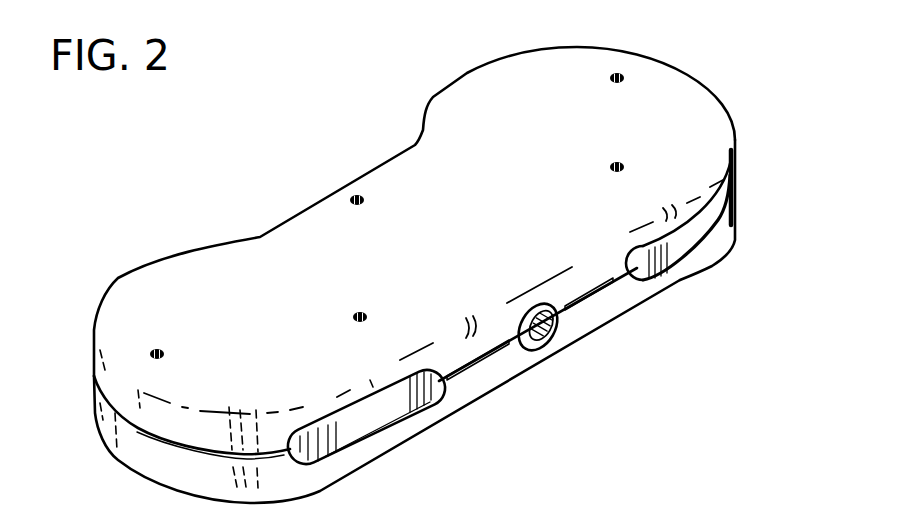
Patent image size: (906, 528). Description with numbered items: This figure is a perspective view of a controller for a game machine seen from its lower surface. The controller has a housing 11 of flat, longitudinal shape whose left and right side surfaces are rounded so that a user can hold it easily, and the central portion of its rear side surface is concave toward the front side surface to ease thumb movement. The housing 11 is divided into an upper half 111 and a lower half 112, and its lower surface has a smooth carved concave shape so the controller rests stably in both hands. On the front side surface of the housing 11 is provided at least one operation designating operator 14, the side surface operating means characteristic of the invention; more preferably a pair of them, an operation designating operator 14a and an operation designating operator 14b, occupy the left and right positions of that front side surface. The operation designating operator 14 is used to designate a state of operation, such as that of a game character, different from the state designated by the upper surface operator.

The housing 11 is at (462, 275).
The upper half 111 is at (700, 275).
The lower half 112 is at (722, 127).
The operation designating operator 14 is at (509, 336).
The operation designating operator 14a is at (438, 397).
The operation designating operator 14b is at (643, 276).